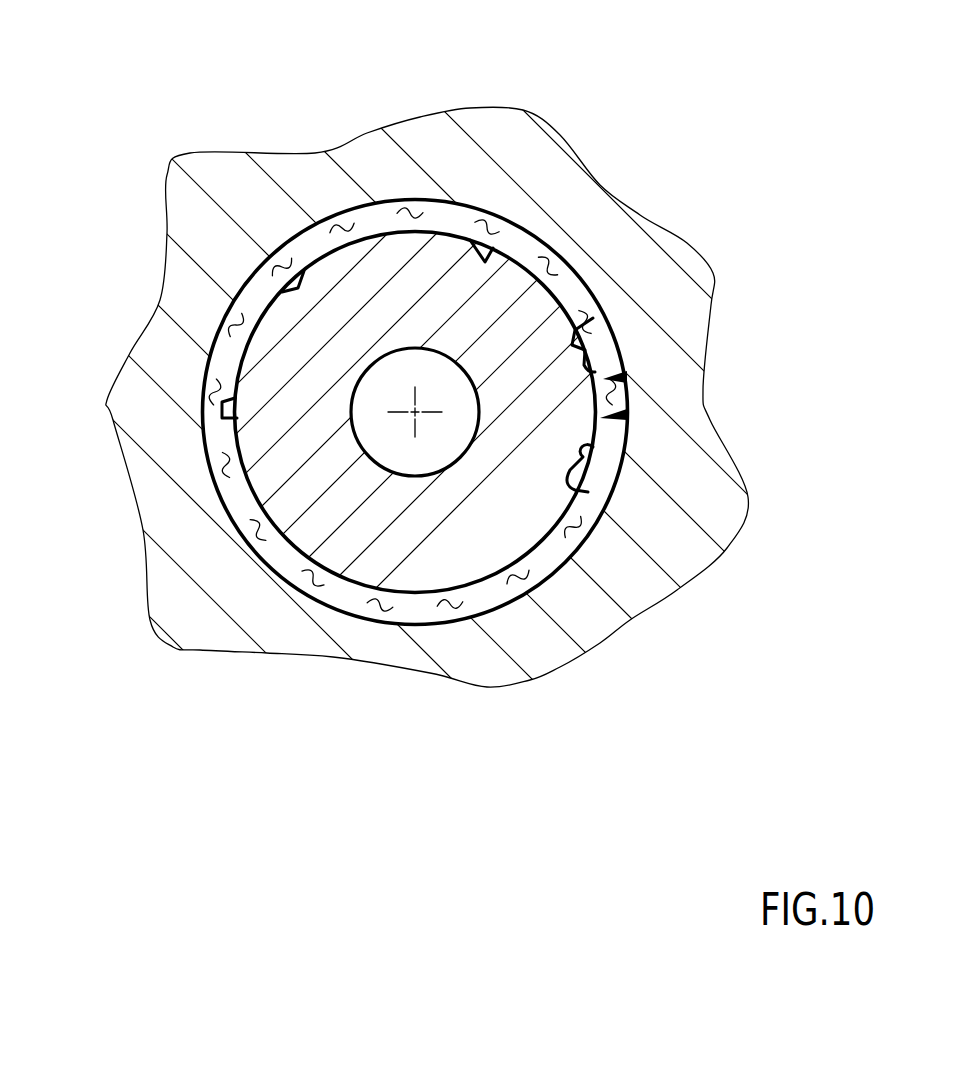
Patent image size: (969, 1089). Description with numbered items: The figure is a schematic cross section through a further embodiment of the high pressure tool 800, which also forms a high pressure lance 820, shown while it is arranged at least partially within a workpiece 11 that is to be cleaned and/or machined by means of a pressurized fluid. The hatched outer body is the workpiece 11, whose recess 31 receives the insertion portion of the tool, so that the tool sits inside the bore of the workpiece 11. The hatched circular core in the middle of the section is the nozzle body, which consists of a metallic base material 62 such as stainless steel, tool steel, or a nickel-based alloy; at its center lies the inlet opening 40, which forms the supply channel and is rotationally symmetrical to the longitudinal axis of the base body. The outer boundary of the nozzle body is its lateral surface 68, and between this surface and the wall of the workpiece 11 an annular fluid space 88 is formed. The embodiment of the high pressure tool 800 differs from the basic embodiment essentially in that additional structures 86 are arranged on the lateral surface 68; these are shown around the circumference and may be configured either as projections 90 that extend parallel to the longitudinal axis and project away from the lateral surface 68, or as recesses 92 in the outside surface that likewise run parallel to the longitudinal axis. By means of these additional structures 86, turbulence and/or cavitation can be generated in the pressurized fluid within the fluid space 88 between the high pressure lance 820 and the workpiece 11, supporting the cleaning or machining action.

The workpiece 11 is at (603, 223).
The recess 31 is at (602, 312).
The inlet opening 40 is at (420, 476).
The metallic base material 62 is at (379, 265).
The lateral surface 68 is at (404, 594).
The additional structures 86 is at (425, 319).
The fluid space 88 is at (486, 596).
The projections 90 is at (282, 281).
The recesses 92 is at (480, 246).
The high pressure tool 800 is at (627, 377).
The high pressure lance 820 is at (627, 415).